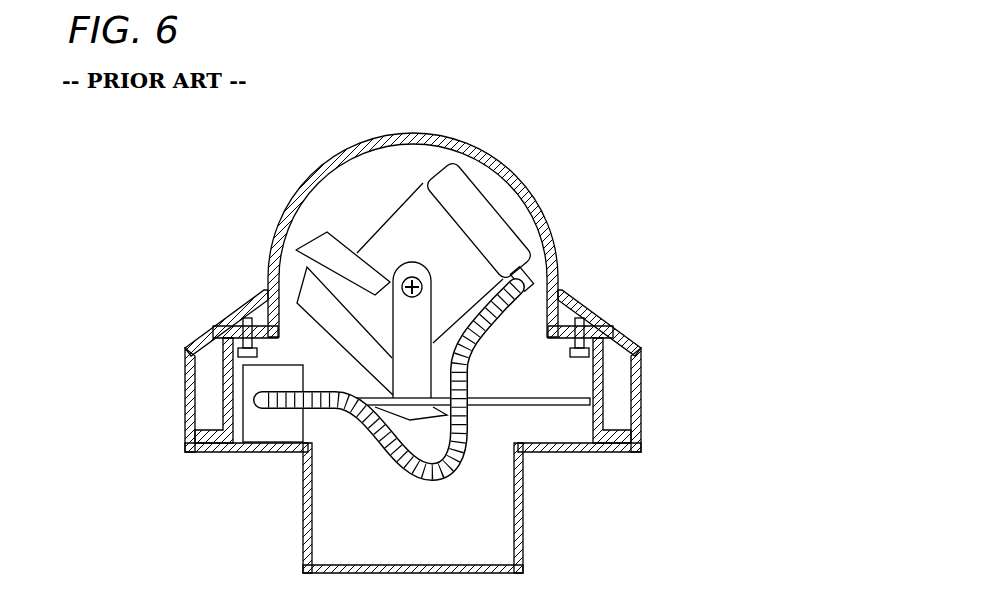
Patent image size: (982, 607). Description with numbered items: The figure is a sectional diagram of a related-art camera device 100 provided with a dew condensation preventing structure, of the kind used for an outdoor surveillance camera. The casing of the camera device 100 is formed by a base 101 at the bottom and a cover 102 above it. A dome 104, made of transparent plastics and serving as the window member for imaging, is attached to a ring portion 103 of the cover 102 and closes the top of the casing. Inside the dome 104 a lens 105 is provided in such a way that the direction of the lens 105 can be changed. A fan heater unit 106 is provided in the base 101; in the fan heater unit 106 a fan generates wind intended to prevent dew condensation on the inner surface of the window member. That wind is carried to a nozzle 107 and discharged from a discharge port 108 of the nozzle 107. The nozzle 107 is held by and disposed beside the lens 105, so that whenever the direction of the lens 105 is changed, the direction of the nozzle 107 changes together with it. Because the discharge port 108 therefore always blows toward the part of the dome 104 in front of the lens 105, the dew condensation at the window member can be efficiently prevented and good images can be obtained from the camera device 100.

The camera device 100 is at (573, 178).
The base 101 is at (576, 471).
The cover 102 is at (620, 303).
The ring portion 103 is at (628, 328).
The dome 104 is at (542, 212).
The lens 105 is at (401, 193).
The fan heater unit 106 is at (260, 432).
The nozzle 107 is at (342, 420).
The discharge port 108 is at (553, 268).